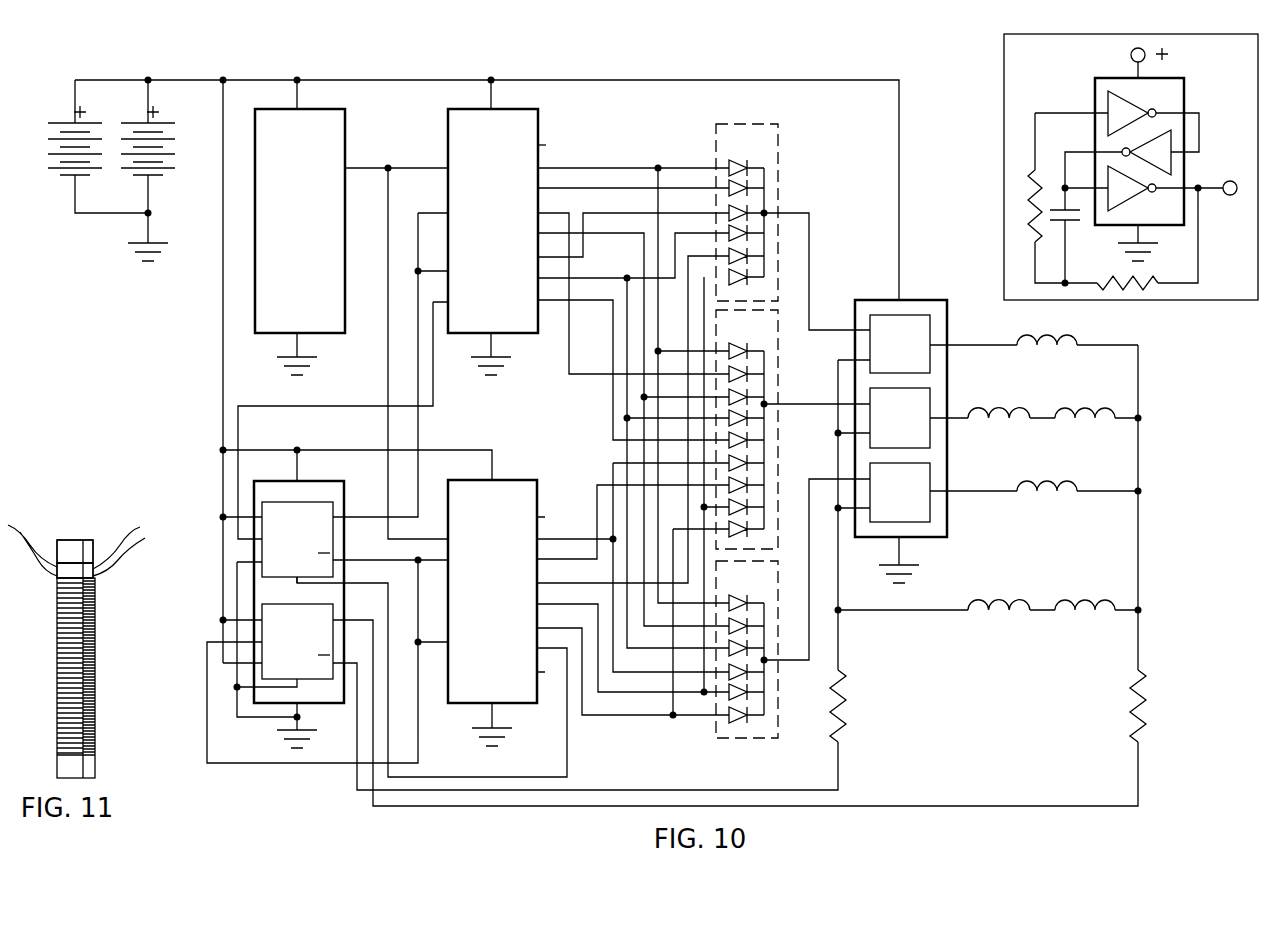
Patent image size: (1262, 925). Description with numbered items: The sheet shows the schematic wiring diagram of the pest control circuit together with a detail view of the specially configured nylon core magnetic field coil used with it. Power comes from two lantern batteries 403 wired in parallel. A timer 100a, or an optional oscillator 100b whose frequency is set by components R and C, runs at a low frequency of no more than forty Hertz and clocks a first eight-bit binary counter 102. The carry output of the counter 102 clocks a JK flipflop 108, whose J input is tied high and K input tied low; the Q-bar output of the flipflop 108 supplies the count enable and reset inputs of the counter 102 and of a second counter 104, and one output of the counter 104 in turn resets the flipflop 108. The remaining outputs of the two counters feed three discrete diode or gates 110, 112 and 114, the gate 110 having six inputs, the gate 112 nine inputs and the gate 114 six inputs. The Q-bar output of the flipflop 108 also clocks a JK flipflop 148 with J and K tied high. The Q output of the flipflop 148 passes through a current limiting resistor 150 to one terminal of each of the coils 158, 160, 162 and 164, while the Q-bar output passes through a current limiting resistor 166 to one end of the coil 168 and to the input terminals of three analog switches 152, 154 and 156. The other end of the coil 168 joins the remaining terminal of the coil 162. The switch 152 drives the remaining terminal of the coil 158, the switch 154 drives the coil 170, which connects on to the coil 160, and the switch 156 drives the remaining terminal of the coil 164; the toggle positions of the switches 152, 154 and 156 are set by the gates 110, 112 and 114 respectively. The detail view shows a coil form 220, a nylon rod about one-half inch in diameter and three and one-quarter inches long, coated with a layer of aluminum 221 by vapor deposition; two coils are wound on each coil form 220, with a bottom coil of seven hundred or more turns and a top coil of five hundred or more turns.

In FIG. 10, the lantern batteries 403 is at (121, 154).
In FIG. 10, the timer 100a is at (300, 221).
In FIG. 10, the oscillator 100b is at (1131, 167).
In FIG. 10, the first eight-bit binary counter 102 is at (497, 221).
In FIG. 10, the counter 104 is at (496, 591).
In FIG. 10, the JK flipflop 108 is at (297, 539).
In FIG. 10, the JK flipflop 148 is at (297, 641).
In FIG. 10, the or gate 110 is at (747, 212).
In FIG. 10, the or gate 112 is at (747, 429).
In FIG. 10, the or gate 114 is at (747, 649).
In FIG. 10, the analog switch 152 is at (900, 344).
In FIG. 10, the analog switch 154 is at (900, 418).
In FIG. 10, the analog switch 156 is at (900, 492).
In FIG. 10, the coil 158 is at (1047, 329).
In FIG. 11, the coil 158 is at (180, 608).
In FIG. 10, the coil 170 is at (999, 401).
In FIG. 11, the coil 170 is at (121, 625).
In FIG. 10, the coil 160 is at (1085, 401).
In FIG. 11, the coil 160 is at (104, 652).
In FIG. 10, the coil 164 is at (1047, 474).
In FIG. 11, the coil 164 is at (121, 706).
In FIG. 10, the coil 168 is at (999, 593).
In FIG. 11, the coil 168 is at (121, 667).
In FIG. 10, the coil 162 is at (1085, 593).
In FIG. 11, the coil 162 is at (104, 694).
In FIG. 10, the current limiting resistor 166 is at (862, 706).
In FIG. 10, the current limiting resistor 150 is at (1113, 706).
In FIG. 11, the coil form 220 is at (68, 546).
In FIG. 11, the layer of aluminum 221 is at (84, 569).